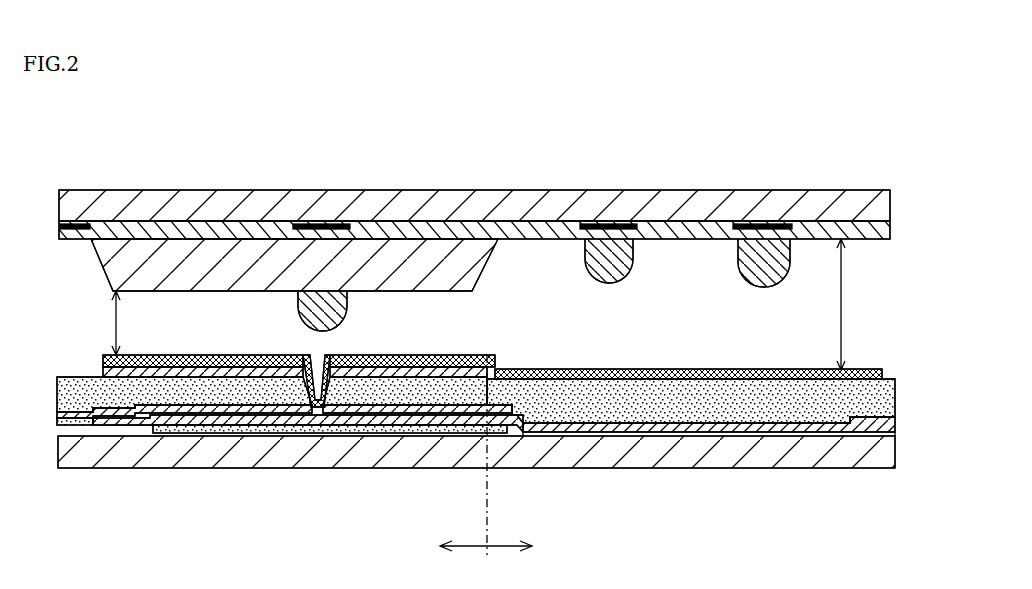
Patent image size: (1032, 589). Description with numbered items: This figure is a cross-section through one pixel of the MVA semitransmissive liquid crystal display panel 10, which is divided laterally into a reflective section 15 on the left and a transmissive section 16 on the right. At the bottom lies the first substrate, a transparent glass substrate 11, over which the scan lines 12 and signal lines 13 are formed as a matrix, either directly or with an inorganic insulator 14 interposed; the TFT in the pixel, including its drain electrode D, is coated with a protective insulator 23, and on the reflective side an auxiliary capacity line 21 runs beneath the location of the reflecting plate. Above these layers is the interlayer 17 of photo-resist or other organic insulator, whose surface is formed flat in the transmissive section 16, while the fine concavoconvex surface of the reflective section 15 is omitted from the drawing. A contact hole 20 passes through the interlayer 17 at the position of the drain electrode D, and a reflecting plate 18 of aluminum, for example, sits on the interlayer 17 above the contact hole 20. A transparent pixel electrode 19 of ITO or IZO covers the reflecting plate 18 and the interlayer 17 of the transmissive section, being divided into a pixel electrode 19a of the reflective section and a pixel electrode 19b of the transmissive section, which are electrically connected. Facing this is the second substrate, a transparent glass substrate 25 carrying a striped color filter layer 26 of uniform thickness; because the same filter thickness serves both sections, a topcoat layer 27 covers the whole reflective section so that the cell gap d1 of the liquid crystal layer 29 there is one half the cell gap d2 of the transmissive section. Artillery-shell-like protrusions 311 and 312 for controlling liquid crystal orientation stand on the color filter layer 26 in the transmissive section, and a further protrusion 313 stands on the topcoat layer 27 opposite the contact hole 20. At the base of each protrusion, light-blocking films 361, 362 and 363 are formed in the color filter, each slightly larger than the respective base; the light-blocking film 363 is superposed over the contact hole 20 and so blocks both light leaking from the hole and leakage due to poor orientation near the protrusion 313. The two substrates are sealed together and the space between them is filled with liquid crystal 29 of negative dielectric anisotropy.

The MVA semitransmissive liquid crystal display panel 10 is at (112, 138).
The transparent glass substrate 11 is at (215, 454).
The scan line 12 is at (875, 437).
The signal line 13 is at (67, 425).
The inorganic insulator 14 is at (618, 437).
The reflective section 15 is at (370, 546).
The transmissive section 16 is at (656, 546).
The interlayer 17 is at (280, 399).
The reflecting plate 18 is at (373, 355).
The transparent pixel electrode 19 is at (492, 340).
The pixel electrode of the reflective section 19a is at (455, 355).
The pixel electrode of the transmissive section 19b is at (688, 354).
The contact hole 20 is at (307, 403).
The auxiliary capacity line 21 is at (400, 435).
The protective insulator 23 is at (572, 432).
The drain electrode D is at (257, 417).
The transparent glass substrate 25 is at (263, 202).
The color filter layer 26 is at (644, 230).
The topcoat layer 27 is at (408, 276).
The liquid crystal layer 29 is at (727, 326).
The protrusion 311 is at (600, 243).
The protrusion 312 is at (768, 247).
The protrusion 313 is at (302, 308).
The light-blocking film 361 is at (598, 229).
The light-blocking film 362 is at (744, 229).
The light-blocking film 363 is at (322, 226).
The cell gap d1 is at (116, 323).
The cell gap d2 is at (839, 304).